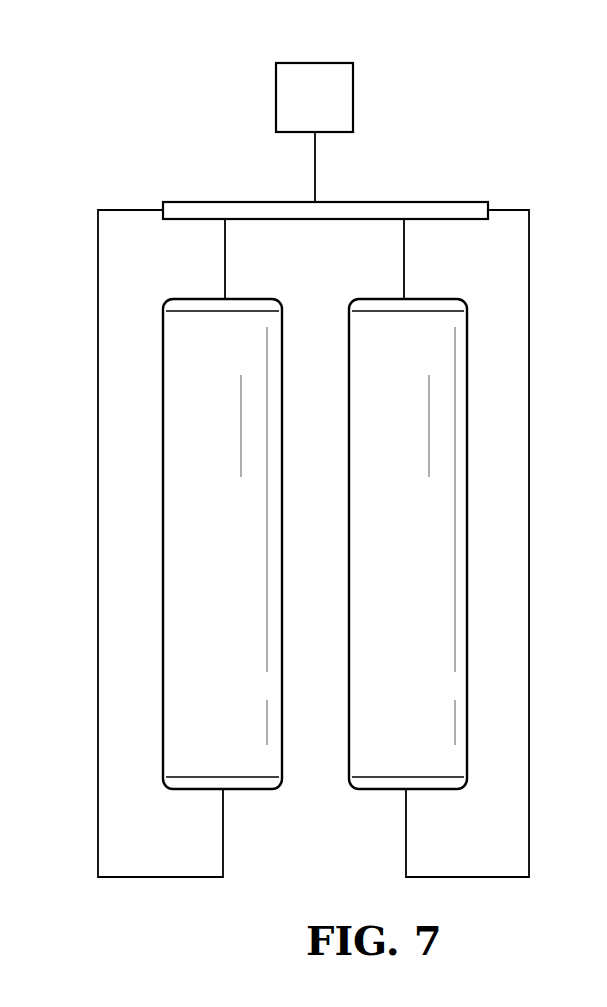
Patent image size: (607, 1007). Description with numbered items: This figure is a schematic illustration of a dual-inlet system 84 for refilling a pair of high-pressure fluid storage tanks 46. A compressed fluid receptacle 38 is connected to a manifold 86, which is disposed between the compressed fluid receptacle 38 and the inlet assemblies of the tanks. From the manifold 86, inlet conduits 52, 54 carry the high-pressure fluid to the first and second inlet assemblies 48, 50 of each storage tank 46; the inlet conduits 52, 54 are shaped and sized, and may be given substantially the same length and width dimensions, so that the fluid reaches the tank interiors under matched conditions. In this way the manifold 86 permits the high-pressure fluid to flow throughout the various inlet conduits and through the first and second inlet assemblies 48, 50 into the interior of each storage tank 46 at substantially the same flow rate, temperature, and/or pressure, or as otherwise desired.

The compressed fluid receptacle 38 is at (353, 91).
The high-pressure fluid storage tank 46 is at (315, 544).
The first inlet assembly 48 is at (226, 299).
The second inlet assembly 50 is at (222, 791).
The inlet conduit 52 is at (224, 240).
The inlet conduit 54 is at (98, 574).
The dual-inlet system 84 is at (94, 168).
The manifold 86 is at (412, 202).